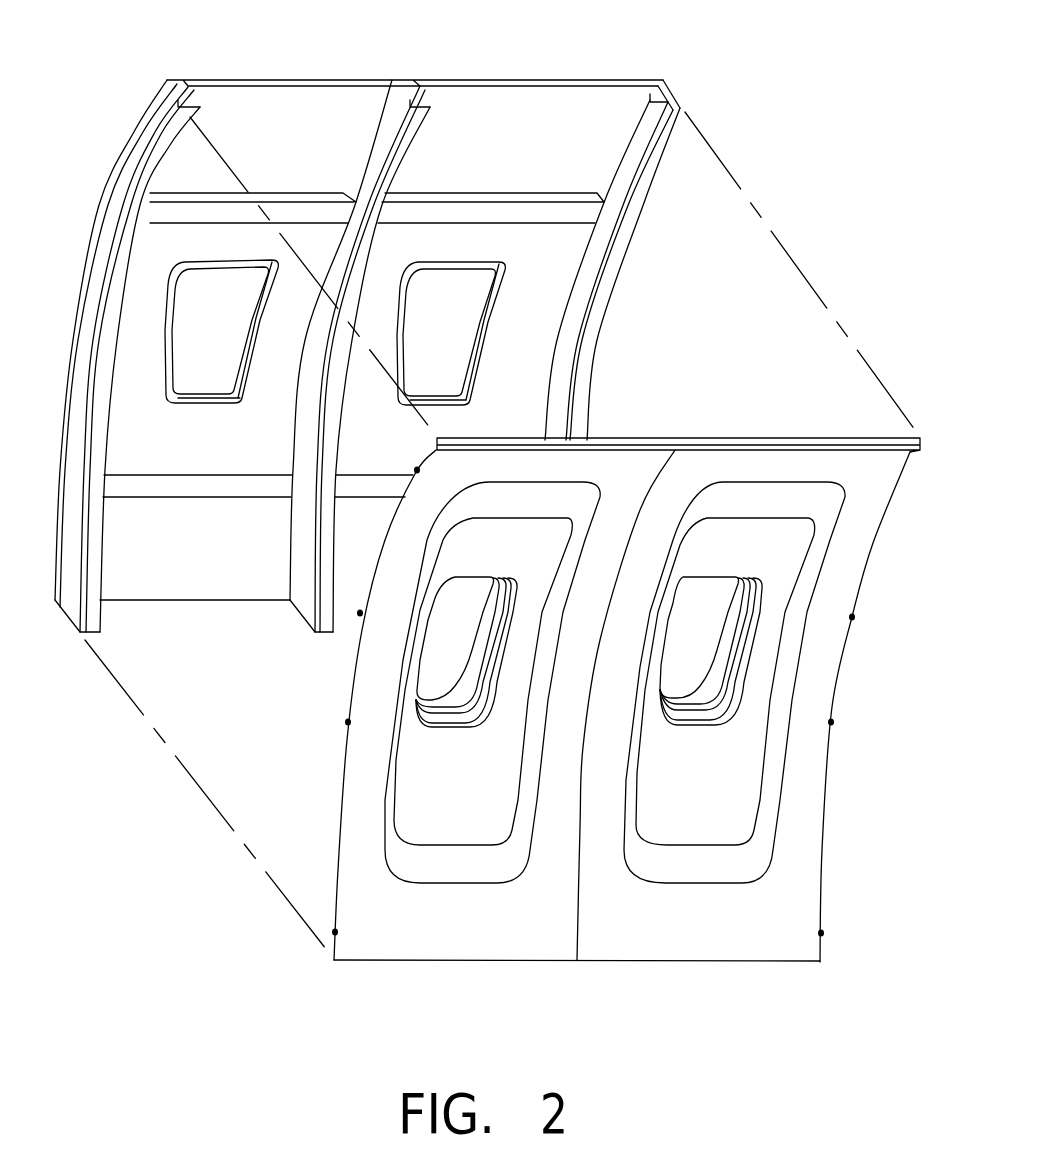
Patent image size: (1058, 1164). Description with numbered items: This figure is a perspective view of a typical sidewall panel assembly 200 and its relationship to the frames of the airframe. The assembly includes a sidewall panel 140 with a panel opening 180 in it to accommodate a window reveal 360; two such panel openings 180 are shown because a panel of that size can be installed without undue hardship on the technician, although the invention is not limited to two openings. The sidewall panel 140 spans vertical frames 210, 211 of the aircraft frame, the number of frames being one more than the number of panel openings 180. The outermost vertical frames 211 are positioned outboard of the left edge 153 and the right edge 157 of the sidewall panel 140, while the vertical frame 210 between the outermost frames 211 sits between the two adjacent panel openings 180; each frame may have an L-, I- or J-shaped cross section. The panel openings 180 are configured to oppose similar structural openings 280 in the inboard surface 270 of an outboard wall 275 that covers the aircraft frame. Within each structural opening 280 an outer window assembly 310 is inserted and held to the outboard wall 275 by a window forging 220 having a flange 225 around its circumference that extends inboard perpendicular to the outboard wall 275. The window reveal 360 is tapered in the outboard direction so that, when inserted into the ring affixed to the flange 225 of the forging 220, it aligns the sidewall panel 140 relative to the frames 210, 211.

The sidewall panel assembly 200 is at (796, 158).
The vertical frame 210 is at (398, 107).
The outermost vertical frame 211 is at (167, 110).
The outboard wall 275 is at (522, 80).
The inboard surface 270 is at (215, 551).
The window forging 220 is at (192, 408).
The flange 225 is at (210, 402).
The structural opening 280 is at (240, 340).
The outer window assembly 310 is at (524, 256).
The sidewall panel 140 is at (474, 928).
The left edge 153 is at (340, 786).
The right edge 157 is at (820, 886).
The panel opening 180 is at (467, 667).
The window reveal 360 is at (417, 683).